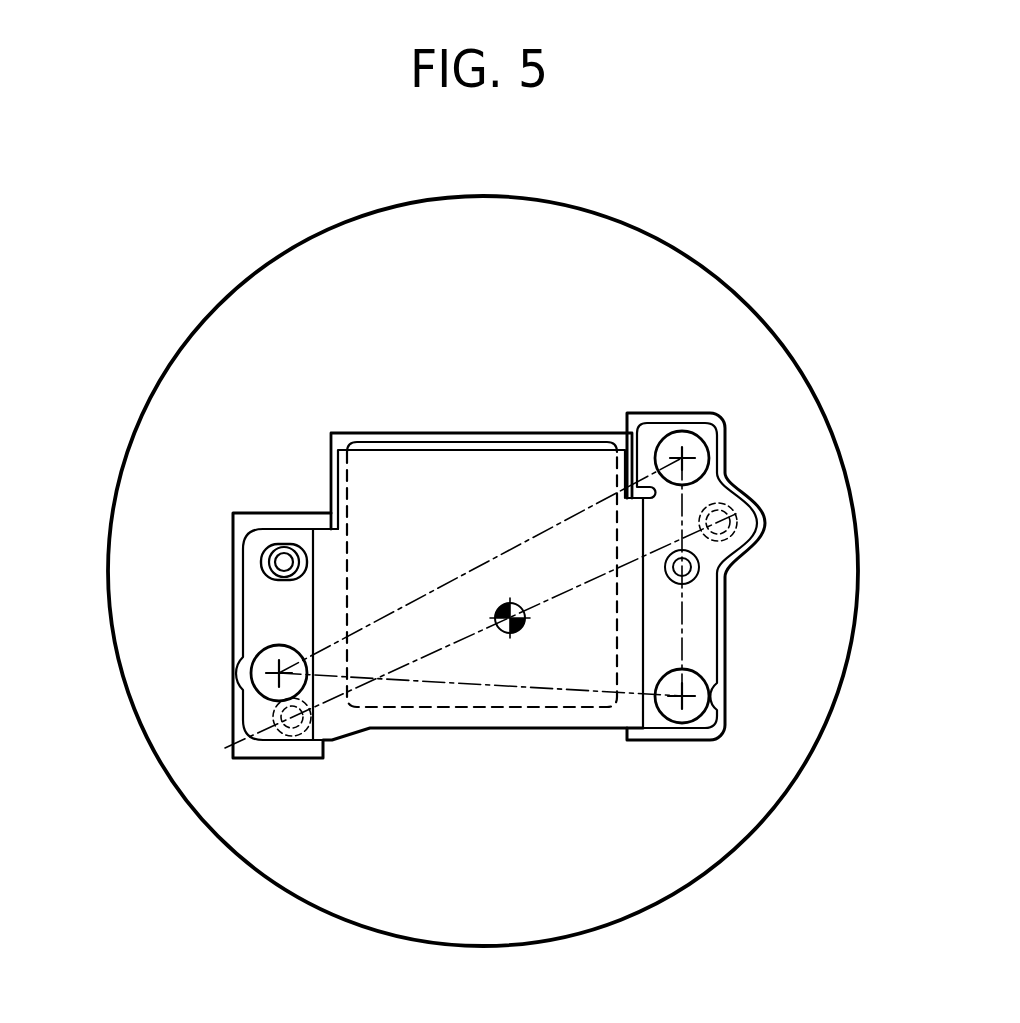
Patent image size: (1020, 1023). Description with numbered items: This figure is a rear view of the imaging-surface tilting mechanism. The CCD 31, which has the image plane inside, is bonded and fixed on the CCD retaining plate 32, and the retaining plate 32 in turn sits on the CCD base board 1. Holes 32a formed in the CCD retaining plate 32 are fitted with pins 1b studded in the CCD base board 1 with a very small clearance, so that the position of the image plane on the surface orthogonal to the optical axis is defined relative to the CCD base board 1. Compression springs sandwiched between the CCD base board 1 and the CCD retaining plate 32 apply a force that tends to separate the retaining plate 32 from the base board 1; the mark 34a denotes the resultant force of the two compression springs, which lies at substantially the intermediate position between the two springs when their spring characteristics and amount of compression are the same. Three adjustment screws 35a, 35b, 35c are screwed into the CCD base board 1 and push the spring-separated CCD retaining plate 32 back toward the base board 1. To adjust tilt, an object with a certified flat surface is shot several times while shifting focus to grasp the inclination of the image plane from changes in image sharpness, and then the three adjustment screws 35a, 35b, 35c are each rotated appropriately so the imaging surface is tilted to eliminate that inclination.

The CCD base board 1 is at (834, 432).
The CCD 31 is at (600, 436).
The CCD retaining plate 32 is at (700, 633).
The holes 32a is at (282, 546).
The pins 1b is at (160, 506).
The resultant force 34a is at (511, 632).
The adjustment screw 35a is at (690, 423).
The adjustment screw 35b is at (723, 727).
The adjustment screw 35c is at (280, 700).